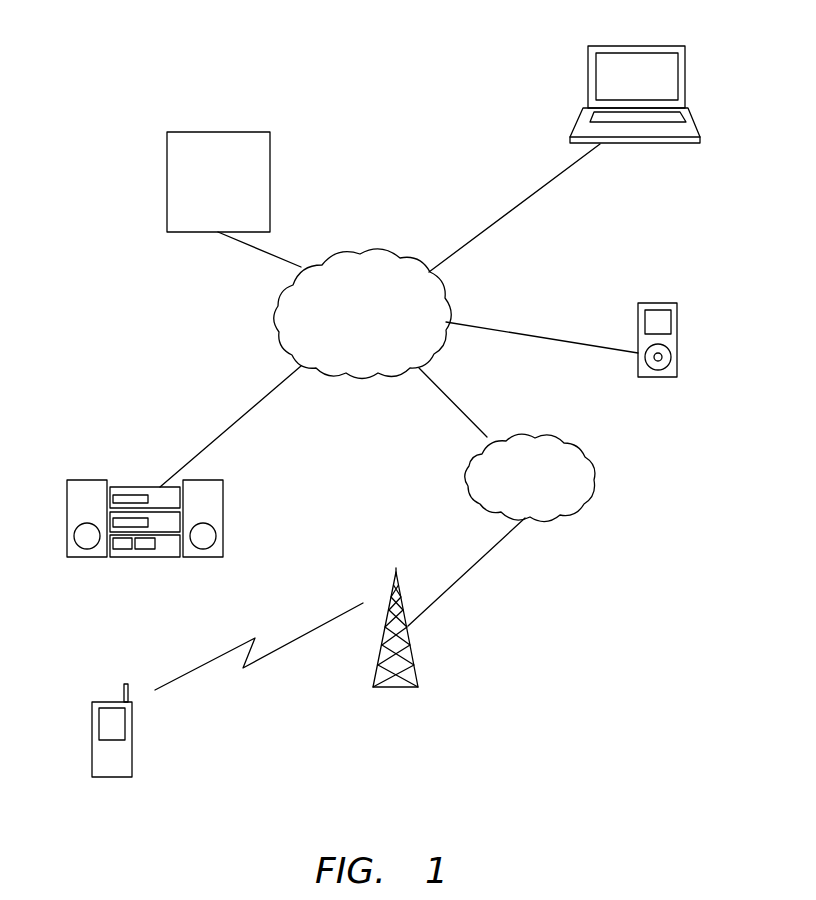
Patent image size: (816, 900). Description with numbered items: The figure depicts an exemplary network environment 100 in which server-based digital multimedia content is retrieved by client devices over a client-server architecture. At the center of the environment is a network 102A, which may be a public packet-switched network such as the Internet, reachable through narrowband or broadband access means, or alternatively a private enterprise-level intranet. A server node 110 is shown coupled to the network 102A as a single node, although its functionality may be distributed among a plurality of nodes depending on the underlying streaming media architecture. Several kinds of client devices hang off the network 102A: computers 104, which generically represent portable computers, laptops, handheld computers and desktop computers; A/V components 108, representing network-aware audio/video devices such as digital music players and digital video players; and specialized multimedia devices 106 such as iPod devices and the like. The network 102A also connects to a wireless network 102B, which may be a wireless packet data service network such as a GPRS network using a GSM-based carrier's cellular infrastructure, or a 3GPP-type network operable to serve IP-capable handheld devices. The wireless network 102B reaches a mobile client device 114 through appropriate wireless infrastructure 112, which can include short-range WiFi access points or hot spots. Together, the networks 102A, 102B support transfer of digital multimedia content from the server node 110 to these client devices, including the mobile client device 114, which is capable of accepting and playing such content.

The network environment 100 is at (627, 692).
The network 102A is at (278, 311).
The wireless network 102B is at (586, 503).
The computers 104 is at (645, 45).
The specialized multimedia devices 106 is at (660, 303).
The A/V components 108 is at (130, 487).
The server node 110 is at (234, 209).
The wireless infrastructure 112 is at (395, 687).
The mobile client device 114 is at (90, 728).